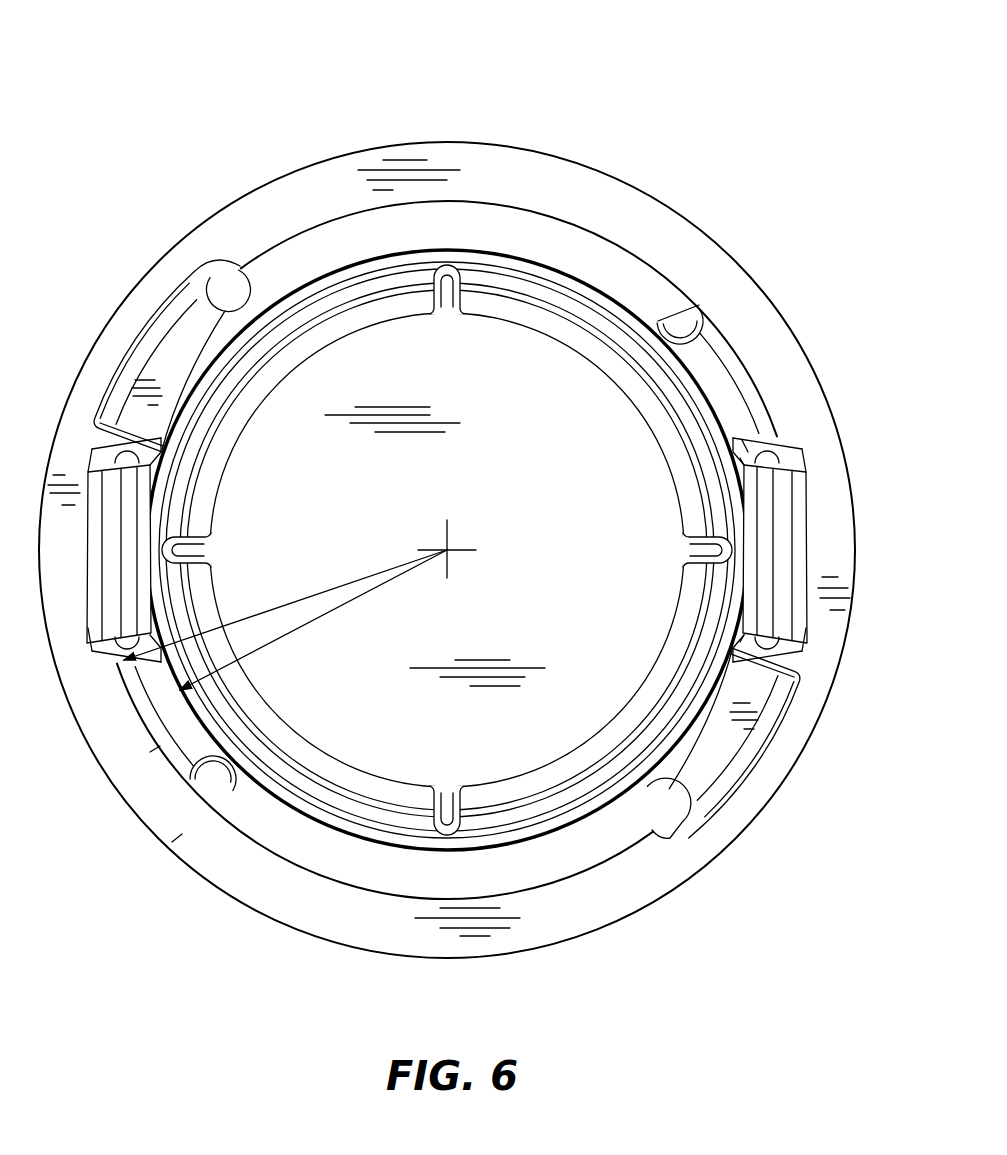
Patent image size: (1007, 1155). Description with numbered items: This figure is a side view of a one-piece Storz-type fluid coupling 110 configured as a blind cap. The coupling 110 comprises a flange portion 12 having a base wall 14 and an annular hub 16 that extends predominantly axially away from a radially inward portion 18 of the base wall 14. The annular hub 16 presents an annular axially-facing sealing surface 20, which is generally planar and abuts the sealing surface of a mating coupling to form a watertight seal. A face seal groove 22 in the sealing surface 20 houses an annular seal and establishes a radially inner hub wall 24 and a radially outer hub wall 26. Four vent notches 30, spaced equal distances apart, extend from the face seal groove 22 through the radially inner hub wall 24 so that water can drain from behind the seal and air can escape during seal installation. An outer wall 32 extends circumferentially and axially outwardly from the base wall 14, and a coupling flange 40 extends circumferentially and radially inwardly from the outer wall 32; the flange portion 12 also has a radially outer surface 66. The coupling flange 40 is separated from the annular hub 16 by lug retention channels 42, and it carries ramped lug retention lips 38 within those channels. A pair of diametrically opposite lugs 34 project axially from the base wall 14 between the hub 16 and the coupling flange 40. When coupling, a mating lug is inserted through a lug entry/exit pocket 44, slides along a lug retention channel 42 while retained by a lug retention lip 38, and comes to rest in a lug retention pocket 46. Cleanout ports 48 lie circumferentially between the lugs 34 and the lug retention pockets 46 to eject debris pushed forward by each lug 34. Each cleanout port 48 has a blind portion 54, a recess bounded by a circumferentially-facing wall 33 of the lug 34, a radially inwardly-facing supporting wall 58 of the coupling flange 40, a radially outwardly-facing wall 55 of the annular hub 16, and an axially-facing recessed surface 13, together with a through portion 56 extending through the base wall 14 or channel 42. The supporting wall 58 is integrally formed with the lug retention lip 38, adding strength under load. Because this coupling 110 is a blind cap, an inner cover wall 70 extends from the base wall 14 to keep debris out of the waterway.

The fluid coupling 110 is at (122, 133).
The flange portion 12 is at (616, 218).
The axially-facing recessed surface 13 is at (718, 370).
The base wall 14 is at (542, 768).
The annular hub 16 is at (402, 796).
The radially inward portion 18 is at (600, 362).
The annular axially-facing sealing surface 20 is at (343, 320).
The face seal groove 22 is at (748, 417).
The radially inner hub wall 24 is at (281, 364).
The radially outer hub wall 26 is at (502, 280).
The vent notch 30 is at (455, 285).
The outer wall 32 is at (180, 838).
The circumferentially-facing wall 33 is at (785, 447).
The lug 34 is at (783, 525).
The lug retention lip 38 is at (272, 236).
The coupling flange 40 is at (165, 745).
The lug retention channel 42 is at (432, 220).
The lug entry/exit pocket 44 is at (160, 368).
The lug retention pocket 46 is at (630, 268).
The cleanout port 48 is at (758, 420).
The blind portion 54 is at (706, 348).
The radially outwardly-facing wall 55 is at (745, 436).
The through portion 56 is at (568, 245).
The radially inwardly-facing supporting wall 58 is at (757, 402).
The radially outer surface 66 is at (843, 657).
The inner cover wall 70 is at (499, 603).